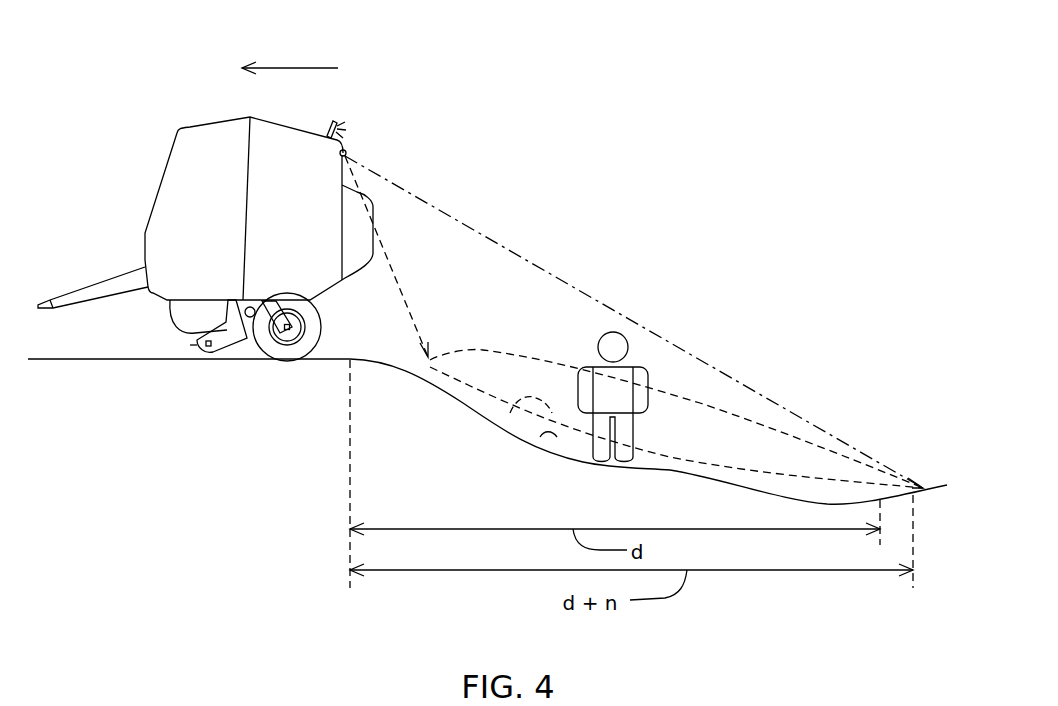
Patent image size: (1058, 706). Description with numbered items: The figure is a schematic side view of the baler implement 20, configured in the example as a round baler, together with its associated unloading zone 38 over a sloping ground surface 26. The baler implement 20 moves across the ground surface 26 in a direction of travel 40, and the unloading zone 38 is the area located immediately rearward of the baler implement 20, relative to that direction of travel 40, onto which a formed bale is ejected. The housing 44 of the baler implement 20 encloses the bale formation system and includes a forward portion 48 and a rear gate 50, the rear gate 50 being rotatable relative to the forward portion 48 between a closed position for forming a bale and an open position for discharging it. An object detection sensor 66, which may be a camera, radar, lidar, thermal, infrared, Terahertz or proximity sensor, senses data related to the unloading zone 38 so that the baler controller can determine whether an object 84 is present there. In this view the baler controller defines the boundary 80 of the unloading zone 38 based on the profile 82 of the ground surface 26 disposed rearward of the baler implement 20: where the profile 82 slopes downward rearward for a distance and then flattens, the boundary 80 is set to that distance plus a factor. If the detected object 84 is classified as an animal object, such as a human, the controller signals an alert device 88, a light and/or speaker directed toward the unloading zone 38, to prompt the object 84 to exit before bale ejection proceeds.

The baler implement 20 is at (205, 363).
The ground surface 26 is at (940, 485).
The unloading zone 38 is at (703, 403).
The direction of travel 40 is at (288, 68).
The housing 44 is at (213, 175).
The forward portion 48 is at (155, 203).
The rear gate 50 is at (283, 123).
The object detection sensor 66 is at (346, 153).
The boundary 80 is at (503, 420).
The profile 82 is at (543, 437).
The object 84 is at (600, 370).
The alert device 88 is at (333, 118).